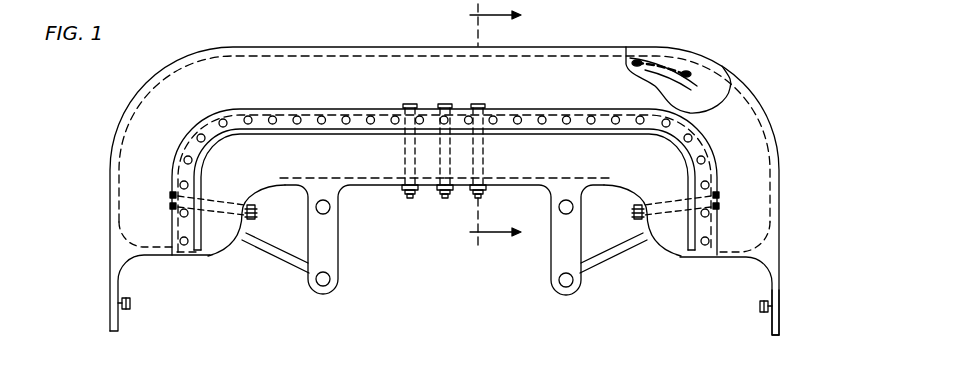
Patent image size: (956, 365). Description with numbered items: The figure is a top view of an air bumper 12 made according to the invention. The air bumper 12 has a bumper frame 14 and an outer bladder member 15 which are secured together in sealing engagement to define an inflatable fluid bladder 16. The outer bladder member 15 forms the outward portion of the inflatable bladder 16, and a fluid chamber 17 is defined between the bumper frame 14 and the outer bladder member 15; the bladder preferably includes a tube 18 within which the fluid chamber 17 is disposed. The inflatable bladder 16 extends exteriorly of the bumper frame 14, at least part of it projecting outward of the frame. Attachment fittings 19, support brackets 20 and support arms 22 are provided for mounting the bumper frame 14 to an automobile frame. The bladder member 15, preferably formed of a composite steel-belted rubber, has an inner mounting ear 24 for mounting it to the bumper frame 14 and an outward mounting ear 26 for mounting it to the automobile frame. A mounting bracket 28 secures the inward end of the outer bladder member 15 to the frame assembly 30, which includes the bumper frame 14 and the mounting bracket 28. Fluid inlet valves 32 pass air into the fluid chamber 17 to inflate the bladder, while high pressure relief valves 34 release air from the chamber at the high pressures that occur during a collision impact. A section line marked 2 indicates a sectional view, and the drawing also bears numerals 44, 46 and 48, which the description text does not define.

The section line 2- 2 is at (504, 124).
The air bumper 12 is at (146, 82).
The bumper frame 14 is at (217, 240).
The outer bladder member 15 is at (727, 80).
The inflatable fluid bladder 16 is at (716, 98).
The fluid chamber 17 is at (688, 86).
The tube 18 is at (639, 62).
The attachment fittings 19 is at (132, 303).
The support brackets 20 is at (332, 248).
The support arms 22 is at (292, 266).
The inner mounting ear 24 is at (738, 257).
The outward mounting ear 26 is at (780, 280).
The mounting bracket 28 is at (688, 231).
The frame assembly 30 is at (664, 178).
The fluid inlet valves 32 is at (443, 198).
The high pressure relief valves 34 is at (258, 213).
The fasteners 44 is at (410, 172).
The right brace 46 is at (715, 238).
The holes 48 is at (640, 126).